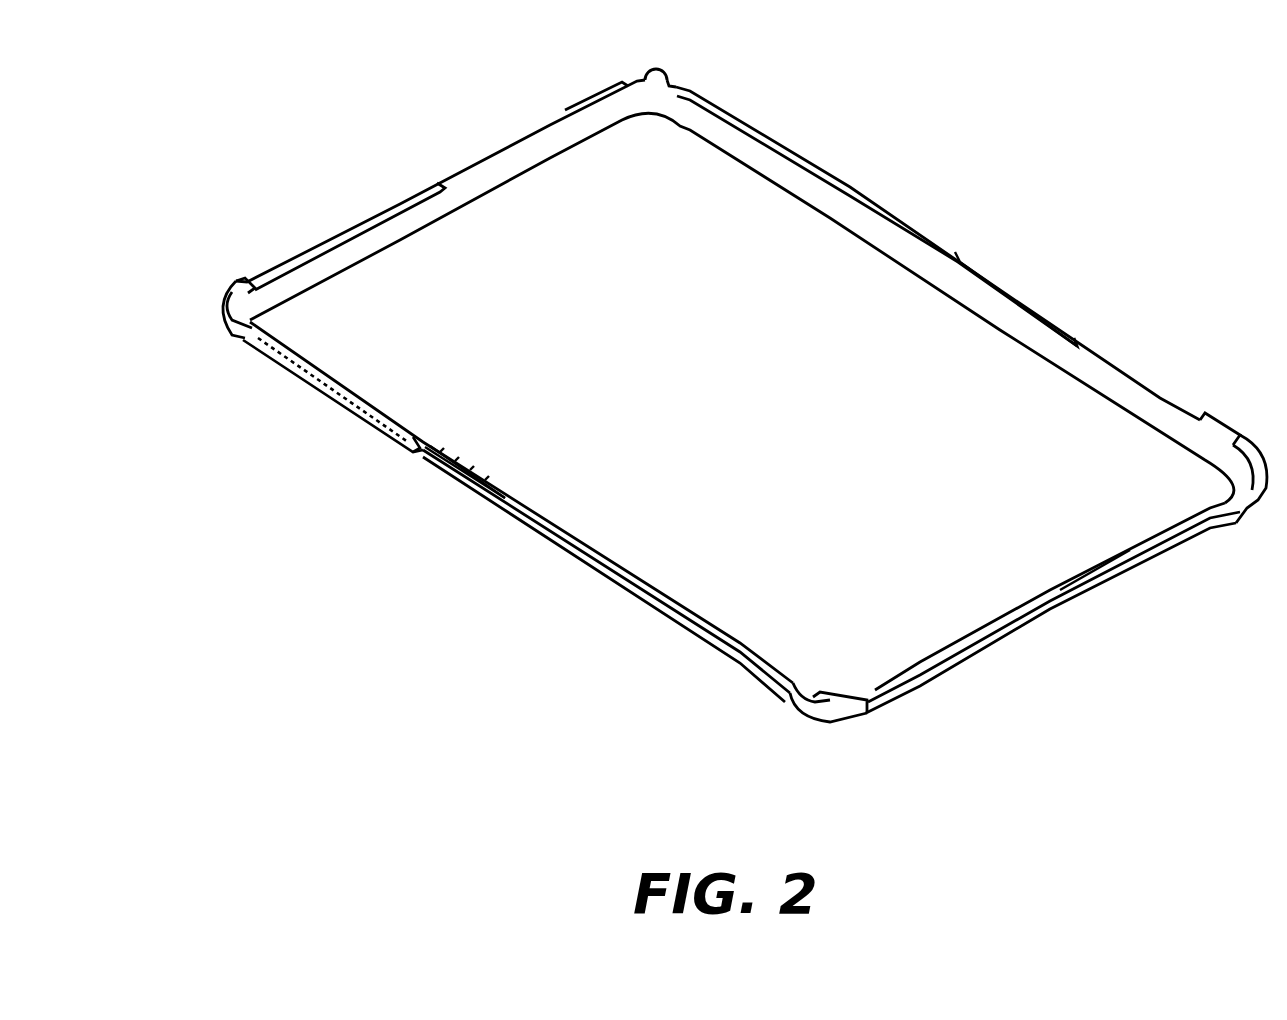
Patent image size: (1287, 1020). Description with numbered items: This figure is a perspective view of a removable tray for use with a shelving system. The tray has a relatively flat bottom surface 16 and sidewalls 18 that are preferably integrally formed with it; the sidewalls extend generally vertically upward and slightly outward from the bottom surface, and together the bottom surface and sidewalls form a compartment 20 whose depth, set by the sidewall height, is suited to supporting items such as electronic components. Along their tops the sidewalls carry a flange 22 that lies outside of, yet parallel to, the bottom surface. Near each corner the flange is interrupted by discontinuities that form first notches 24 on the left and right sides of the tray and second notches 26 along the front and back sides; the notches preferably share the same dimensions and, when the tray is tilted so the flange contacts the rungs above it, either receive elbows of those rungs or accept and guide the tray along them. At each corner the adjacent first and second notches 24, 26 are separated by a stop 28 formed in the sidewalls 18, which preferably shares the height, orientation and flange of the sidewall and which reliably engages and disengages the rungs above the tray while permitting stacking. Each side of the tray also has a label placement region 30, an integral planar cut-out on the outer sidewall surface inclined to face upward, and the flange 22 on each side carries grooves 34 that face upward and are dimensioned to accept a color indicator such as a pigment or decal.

The bottom surface 16 is at (780, 242).
The sidewalls 18 is at (906, 230).
The compartment 20 is at (634, 215).
The flange 22 is at (958, 252).
The first notches 24 is at (227, 327).
The second notches 26 is at (243, 292).
The stop 28 is at (223, 297).
The label placement region 30 is at (327, 393).
The grooves 34 is at (483, 497).